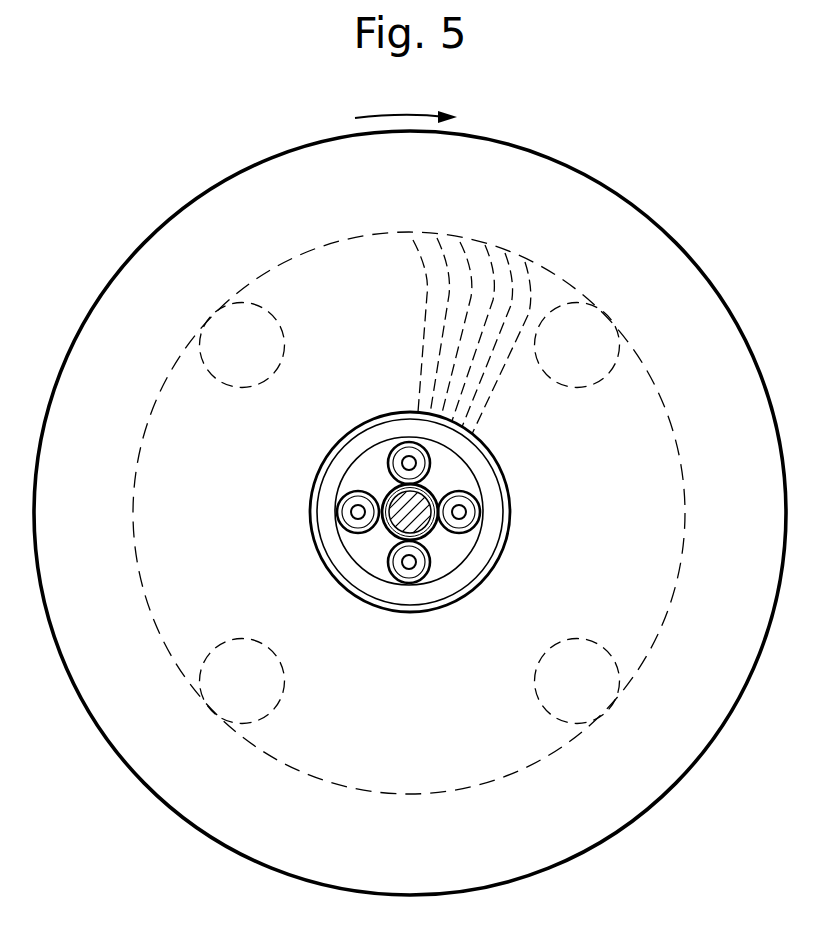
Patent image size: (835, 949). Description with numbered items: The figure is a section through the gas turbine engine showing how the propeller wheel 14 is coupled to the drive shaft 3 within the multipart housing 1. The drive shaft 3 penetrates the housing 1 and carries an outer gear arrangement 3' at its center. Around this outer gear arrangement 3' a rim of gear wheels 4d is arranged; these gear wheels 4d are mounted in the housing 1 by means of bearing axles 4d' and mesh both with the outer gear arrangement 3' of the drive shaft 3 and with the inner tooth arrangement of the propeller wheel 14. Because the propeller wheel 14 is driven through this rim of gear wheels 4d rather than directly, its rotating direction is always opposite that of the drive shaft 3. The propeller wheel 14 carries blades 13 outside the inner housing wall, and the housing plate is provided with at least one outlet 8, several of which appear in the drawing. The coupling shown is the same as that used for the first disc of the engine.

The housing 1 is at (520, 173).
The drive shaft 3 is at (431, 546).
The outer gear arrangement 3' is at (376, 473).
The gear wheels 4d is at (410, 537).
The bearing axles 4d' is at (413, 487).
The outlet 8 is at (258, 386).
The blades 13 is at (404, 236).
The propeller wheel 14 is at (469, 460).